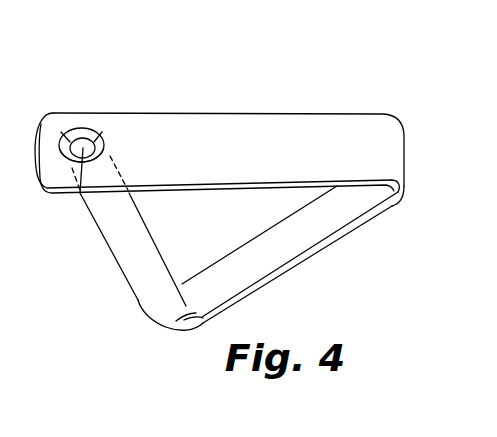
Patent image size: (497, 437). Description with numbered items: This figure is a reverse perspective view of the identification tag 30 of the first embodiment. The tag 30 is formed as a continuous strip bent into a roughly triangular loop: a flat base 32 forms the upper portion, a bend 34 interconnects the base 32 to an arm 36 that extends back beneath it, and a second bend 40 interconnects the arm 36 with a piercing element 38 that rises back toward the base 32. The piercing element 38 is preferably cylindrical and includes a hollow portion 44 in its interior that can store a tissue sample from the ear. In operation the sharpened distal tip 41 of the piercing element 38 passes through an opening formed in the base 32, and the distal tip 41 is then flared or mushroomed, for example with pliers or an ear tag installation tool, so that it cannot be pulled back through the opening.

The tag 30 is at (282, 89).
The base 32 is at (248, 171).
The bend 34 is at (404, 153).
The arm 36 is at (300, 230).
The piercing element 38 is at (142, 276).
The bend 40 is at (203, 322).
The distal tip 41 is at (83, 129).
The hollow portion 44 is at (80, 193).